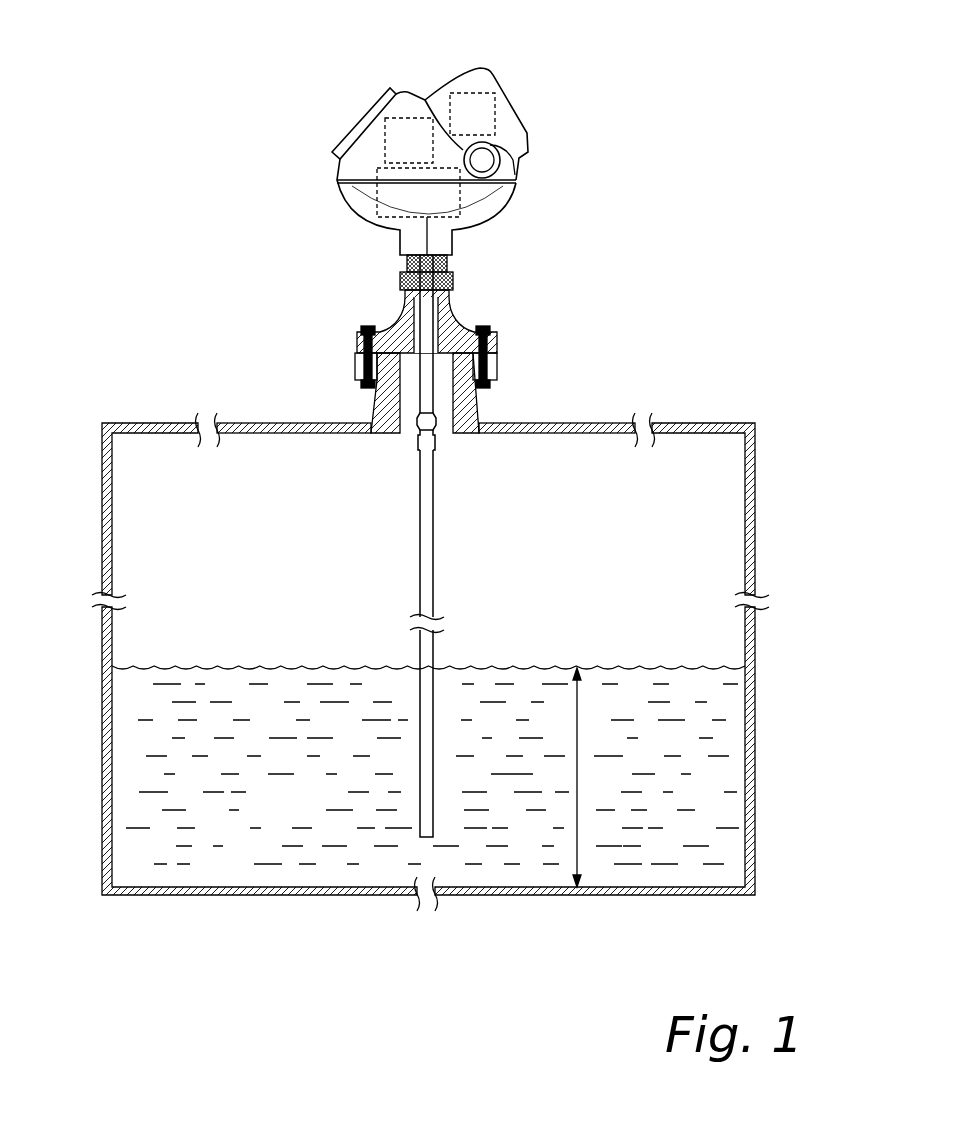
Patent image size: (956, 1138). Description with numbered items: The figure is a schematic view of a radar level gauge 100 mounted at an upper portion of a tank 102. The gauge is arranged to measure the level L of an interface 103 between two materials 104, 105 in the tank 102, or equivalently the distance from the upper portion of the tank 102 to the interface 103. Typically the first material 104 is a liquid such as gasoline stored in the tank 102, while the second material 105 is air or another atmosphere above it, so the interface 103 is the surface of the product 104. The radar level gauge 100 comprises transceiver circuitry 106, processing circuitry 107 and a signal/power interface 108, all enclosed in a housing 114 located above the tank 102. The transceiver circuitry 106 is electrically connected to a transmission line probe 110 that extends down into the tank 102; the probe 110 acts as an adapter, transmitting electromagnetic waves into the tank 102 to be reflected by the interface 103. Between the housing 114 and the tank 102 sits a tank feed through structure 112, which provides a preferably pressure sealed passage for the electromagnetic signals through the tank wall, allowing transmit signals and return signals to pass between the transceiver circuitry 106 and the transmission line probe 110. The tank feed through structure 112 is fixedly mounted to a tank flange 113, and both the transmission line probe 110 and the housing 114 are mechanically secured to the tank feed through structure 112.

The radar level gauge 100 is at (580, 107).
The tank 102 is at (573, 422).
The interface 103 is at (220, 667).
The first material 104 is at (297, 816).
The second material 105 is at (308, 552).
The transceiver circuitry 106 is at (375, 190).
The processing circuitry 107 is at (388, 153).
The signal/power interface 108 is at (472, 97).
The transmission line probe 110 is at (430, 510).
The tank feed through structure 112 is at (380, 310).
The tank flange 113 is at (477, 410).
The housing 114 is at (505, 208).
The level L is at (584, 777).